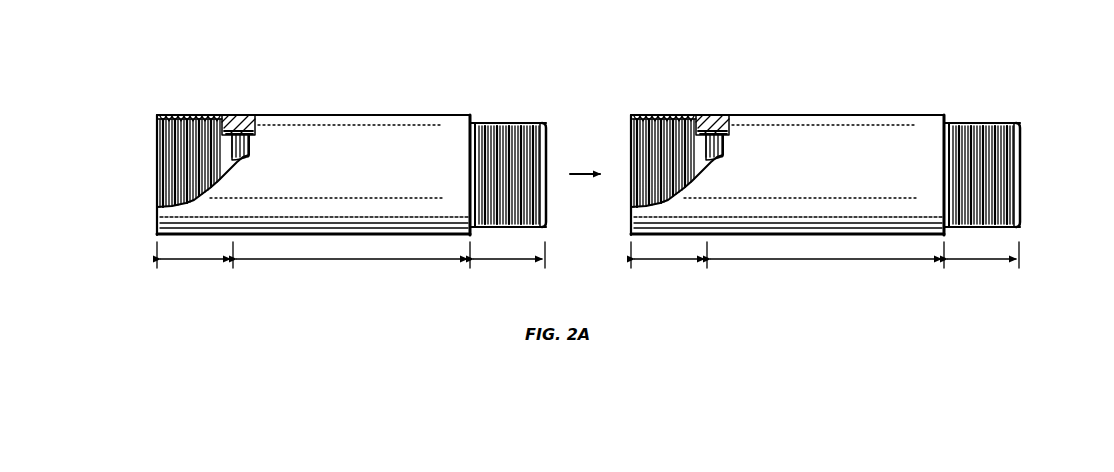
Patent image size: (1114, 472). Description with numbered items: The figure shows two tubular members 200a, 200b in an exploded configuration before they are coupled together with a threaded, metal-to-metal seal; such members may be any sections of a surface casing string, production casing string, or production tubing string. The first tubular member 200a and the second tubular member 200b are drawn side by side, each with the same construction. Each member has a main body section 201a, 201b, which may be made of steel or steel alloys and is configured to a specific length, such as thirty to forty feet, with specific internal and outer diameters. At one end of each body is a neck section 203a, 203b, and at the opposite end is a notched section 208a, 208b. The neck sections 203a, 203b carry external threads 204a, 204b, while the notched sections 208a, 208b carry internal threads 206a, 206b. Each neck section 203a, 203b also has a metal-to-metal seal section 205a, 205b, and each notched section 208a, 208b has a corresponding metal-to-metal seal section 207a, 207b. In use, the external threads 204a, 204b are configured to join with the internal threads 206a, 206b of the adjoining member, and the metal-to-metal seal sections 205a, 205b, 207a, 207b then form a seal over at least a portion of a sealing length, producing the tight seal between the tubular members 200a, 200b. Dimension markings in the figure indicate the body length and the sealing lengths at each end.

The first tubular member 200a is at (308, 52).
The second tubular member 200b is at (798, 52).
The main body section 201a is at (321, 115).
The main body section 201b is at (787, 163).
The neck section 203a is at (539, 117).
The neck section 203b is at (982, 156).
The external threads 204a is at (487, 150).
The external threads 204b is at (1015, 175).
The metal-to-metal seal section 205a is at (543, 125).
The metal-to-metal seal section 205b is at (1023, 144).
The internal threads 206a is at (177, 167).
The internal threads 206b is at (671, 130).
The metal-to-metal seal section 207a is at (231, 116).
The metal-to-metal seal section 207b is at (733, 125).
The notched section 208a is at (222, 110).
The notched section 208b is at (663, 142).